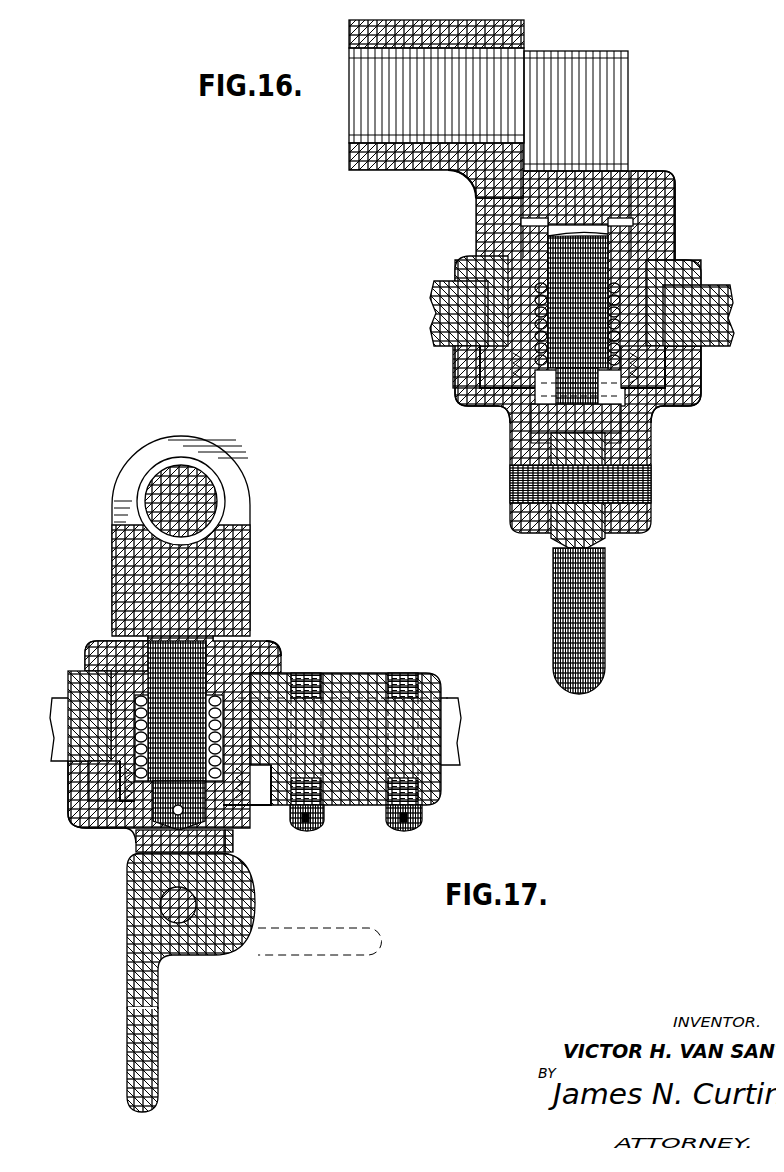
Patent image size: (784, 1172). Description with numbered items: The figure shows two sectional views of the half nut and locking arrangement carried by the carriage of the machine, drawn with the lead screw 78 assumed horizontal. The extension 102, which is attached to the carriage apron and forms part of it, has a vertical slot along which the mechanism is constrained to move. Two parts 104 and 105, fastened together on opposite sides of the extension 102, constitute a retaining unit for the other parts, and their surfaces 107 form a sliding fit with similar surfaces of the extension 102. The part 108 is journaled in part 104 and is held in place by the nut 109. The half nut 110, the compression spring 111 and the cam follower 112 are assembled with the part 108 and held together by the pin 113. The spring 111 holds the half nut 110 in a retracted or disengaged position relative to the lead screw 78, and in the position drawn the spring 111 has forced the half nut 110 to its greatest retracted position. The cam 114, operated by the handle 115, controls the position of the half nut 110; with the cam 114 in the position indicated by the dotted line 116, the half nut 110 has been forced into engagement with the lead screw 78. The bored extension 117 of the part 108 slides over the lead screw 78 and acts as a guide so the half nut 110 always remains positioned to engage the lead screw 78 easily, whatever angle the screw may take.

In FIG. 16, the lead screw 78 is at (620, 74).
In FIG. 17, the lead screw 78 is at (200, 497).
In FIG. 16, the extension 102 is at (706, 279).
In FIG. 17, the extension 102 is at (445, 690).
In FIG. 16, the retaining part 104 is at (690, 252).
In FIG. 17, the retaining part 104 is at (368, 666).
In FIG. 16, the retaining part 105 is at (694, 381).
In FIG. 17, the retaining part 105 is at (300, 822).
In FIG. 16, the sliding surfaces 107 is at (470, 334).
In FIG. 17, the sliding surfaces 107 is at (72, 668).
In FIG. 16, the journaled part 108 is at (462, 170).
In FIG. 17, the journaled part 108 is at (245, 635).
In FIG. 16, the nut 109 is at (458, 372).
In FIG. 17, the nut 109 is at (92, 808).
In FIG. 16, the half nut 110 is at (605, 185).
In FIG. 17, the half nut 110 is at (245, 560).
In FIG. 16, the compression spring 111 is at (672, 196).
In FIG. 17, the compression spring 111 is at (245, 648).
In FIG. 16, the cam follower 112 is at (612, 406).
In FIG. 17, the cam follower 112 is at (135, 838).
In FIG. 16, the pin 113 is at (522, 402).
In FIG. 17, the pin 113 is at (179, 735).
In FIG. 16, the cam 114 is at (545, 530).
In FIG. 17, the cam 114 is at (248, 892).
In FIG. 16, the handle 115 is at (598, 594).
In FIG. 17, the handle 115 is at (152, 1040).
In FIG. 17, the dotted-line cam position 116 is at (226, 836).
In FIG. 16, the bored extension 117 is at (402, 150).